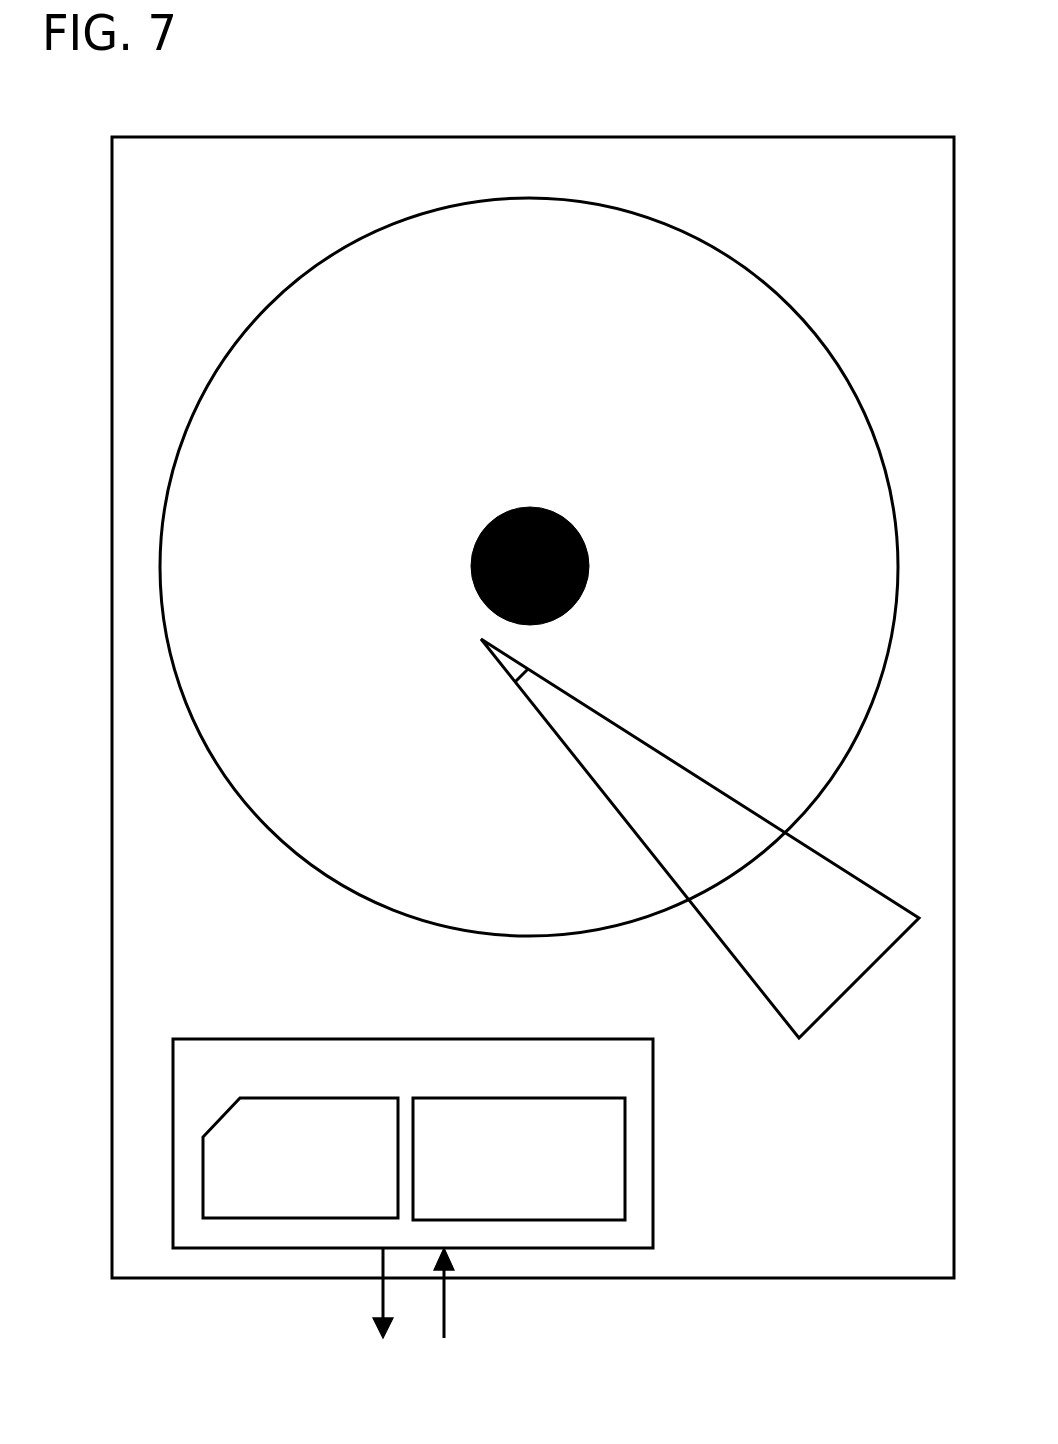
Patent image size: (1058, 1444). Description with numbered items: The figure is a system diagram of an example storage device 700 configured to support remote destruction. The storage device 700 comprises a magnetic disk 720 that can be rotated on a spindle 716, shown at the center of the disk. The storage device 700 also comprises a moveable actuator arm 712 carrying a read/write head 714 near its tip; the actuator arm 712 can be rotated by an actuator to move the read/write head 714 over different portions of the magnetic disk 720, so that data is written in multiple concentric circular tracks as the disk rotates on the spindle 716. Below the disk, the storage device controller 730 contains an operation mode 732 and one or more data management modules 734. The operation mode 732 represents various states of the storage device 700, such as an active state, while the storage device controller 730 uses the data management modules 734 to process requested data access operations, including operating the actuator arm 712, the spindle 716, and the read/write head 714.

The storage device 700 is at (533, 707).
The magnetic disk 720 is at (529, 567).
The spindle 716 is at (590, 568).
The read/write head 714 is at (500, 668).
The actuator arm 712 is at (843, 870).
The storage device controller 730 is at (413, 1143).
The operation mode 732 is at (300, 1158).
The data management modules 734 is at (519, 1159).